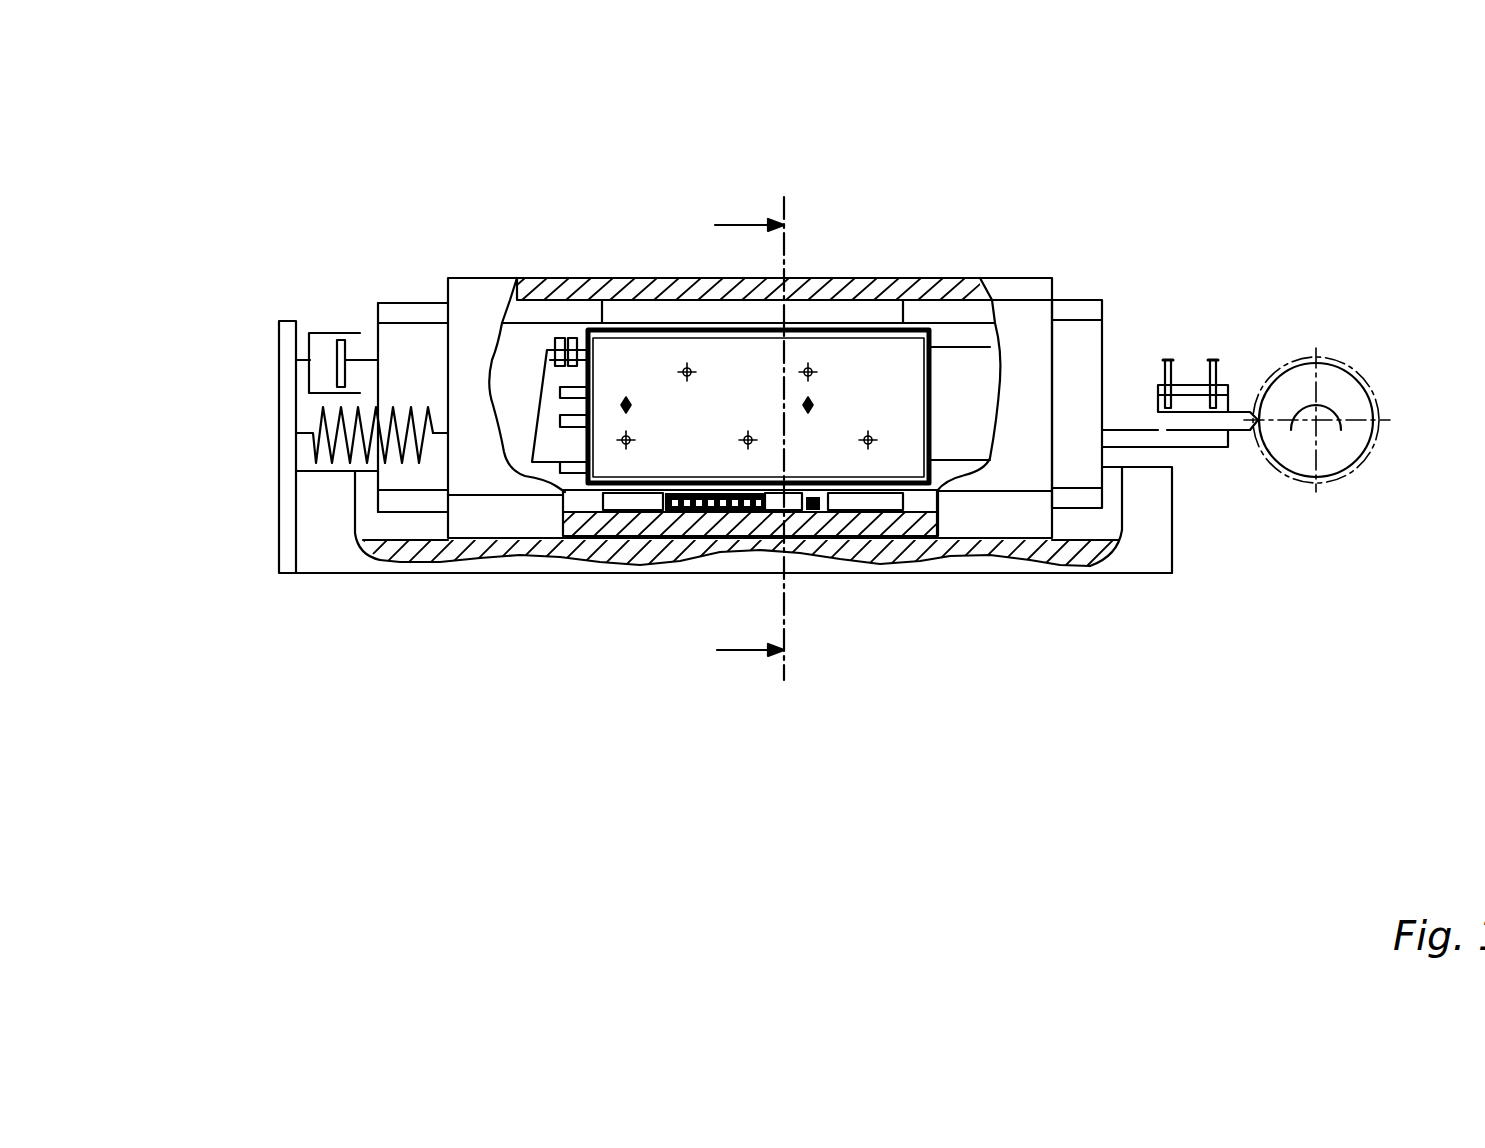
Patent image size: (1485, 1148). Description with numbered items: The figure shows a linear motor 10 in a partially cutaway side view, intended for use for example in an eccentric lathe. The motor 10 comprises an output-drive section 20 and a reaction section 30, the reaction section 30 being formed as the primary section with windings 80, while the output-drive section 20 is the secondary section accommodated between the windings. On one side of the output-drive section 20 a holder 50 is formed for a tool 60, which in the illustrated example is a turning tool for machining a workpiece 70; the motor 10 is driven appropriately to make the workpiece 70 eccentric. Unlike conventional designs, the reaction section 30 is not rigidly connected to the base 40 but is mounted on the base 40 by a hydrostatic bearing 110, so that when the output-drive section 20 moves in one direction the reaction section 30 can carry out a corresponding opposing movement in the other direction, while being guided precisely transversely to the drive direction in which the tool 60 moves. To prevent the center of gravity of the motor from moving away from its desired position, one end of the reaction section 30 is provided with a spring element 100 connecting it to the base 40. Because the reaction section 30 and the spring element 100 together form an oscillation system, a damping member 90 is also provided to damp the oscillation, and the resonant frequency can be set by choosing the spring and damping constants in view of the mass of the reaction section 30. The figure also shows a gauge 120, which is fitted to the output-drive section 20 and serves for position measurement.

The motor 10 is at (792, 411).
The output-drive section 20 is at (1087, 310).
The reaction section 30 is at (1023, 340).
The base 40 is at (287, 525).
The holder 50 is at (1185, 403).
The tool 60 is at (1245, 415).
The workpiece 70 is at (1352, 403).
The winding section 80 is at (640, 455).
The damping member 90 is at (327, 347).
The spring element 100 is at (320, 435).
The hydrostatic bearing 110 is at (935, 490).
The gauge 120 is at (700, 510).